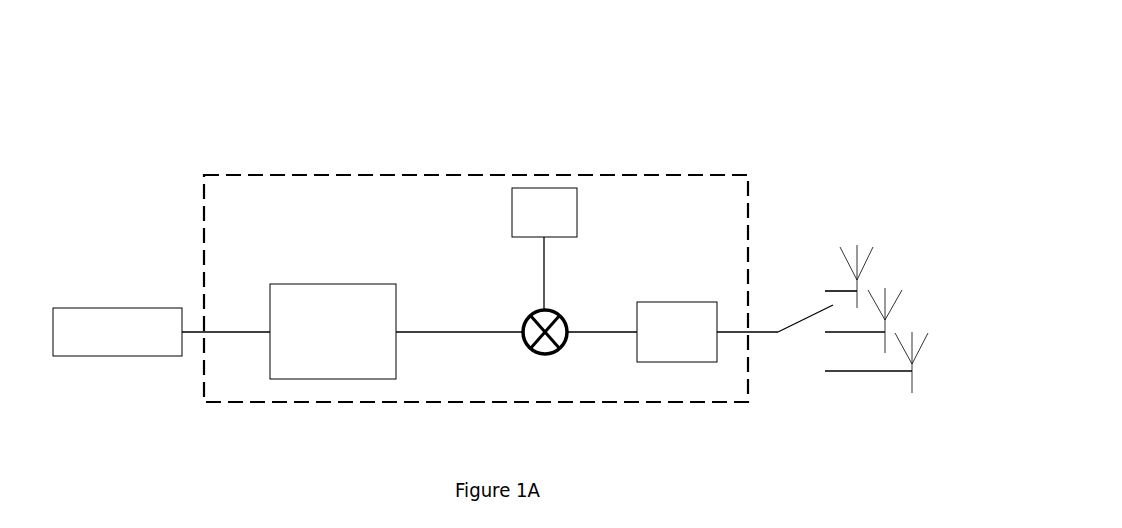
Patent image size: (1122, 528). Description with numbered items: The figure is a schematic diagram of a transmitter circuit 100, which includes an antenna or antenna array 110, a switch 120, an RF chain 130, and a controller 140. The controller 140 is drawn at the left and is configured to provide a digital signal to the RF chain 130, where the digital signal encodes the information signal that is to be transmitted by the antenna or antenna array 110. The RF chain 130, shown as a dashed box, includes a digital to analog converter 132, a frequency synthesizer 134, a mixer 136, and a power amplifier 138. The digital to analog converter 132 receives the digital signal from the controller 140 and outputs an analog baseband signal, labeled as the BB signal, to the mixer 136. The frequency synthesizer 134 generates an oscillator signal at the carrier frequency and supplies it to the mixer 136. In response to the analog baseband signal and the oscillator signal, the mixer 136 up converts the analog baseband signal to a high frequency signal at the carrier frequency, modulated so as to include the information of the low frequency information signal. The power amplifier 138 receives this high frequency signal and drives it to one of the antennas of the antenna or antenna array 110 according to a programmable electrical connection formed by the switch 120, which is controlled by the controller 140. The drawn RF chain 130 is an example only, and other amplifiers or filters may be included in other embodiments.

The transmitter circuit 100 is at (682, 51).
The antenna or antenna array 110 is at (930, 262).
The switch 120 is at (806, 272).
The RF chain 130 is at (508, 172).
The digital to analog converter 132 is at (268, 290).
The frequency synthesizer 134 is at (512, 218).
The mixer 136 is at (522, 343).
The power amplifier 138 is at (648, 301).
The controller 140 is at (108, 307).